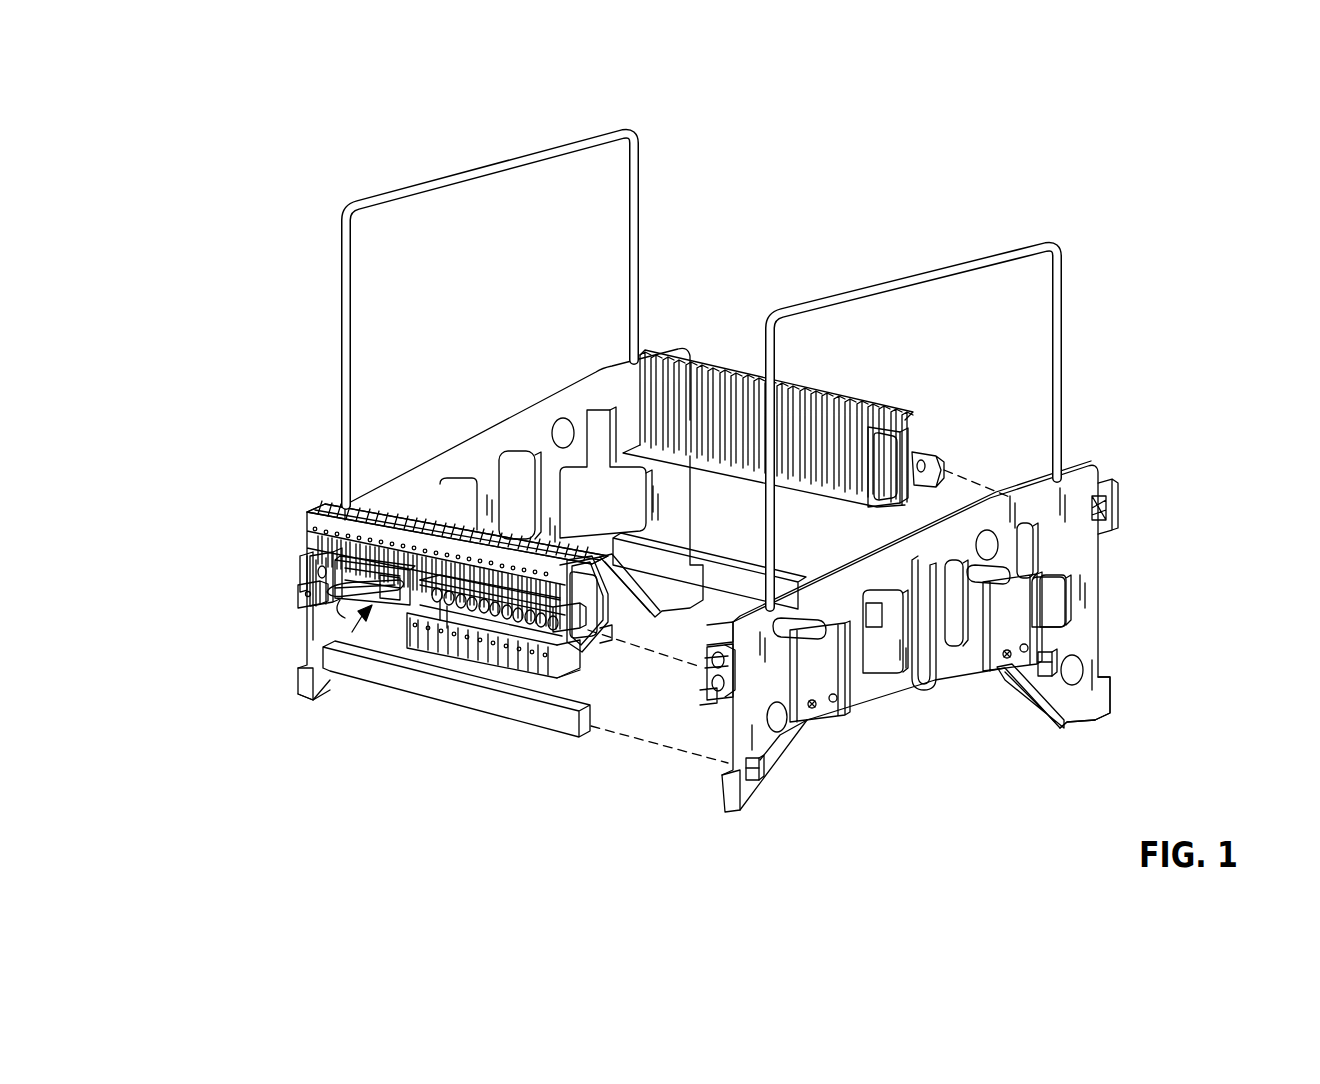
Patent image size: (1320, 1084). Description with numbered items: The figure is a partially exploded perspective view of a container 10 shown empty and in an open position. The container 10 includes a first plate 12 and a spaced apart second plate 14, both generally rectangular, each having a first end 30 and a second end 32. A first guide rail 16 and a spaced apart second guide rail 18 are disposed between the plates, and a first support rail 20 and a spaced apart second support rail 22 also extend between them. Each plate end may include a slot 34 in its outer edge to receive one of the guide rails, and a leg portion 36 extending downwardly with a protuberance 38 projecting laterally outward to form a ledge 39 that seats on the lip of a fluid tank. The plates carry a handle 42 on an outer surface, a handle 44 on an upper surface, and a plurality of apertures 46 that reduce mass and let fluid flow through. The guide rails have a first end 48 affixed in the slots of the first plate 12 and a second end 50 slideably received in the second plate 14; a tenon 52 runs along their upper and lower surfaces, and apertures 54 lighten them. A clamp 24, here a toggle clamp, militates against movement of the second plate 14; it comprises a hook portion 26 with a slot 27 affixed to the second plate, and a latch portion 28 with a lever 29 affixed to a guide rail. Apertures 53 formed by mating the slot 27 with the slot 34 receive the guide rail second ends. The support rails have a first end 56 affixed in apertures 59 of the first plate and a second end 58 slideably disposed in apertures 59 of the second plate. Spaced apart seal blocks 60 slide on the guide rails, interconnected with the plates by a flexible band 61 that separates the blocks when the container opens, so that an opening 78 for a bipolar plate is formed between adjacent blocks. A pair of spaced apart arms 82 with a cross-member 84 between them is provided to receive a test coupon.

The container 10 is at (192, 209).
The first plate 12 is at (330, 632).
The second plate 14 is at (1077, 480).
The first guide rail 16 is at (450, 660).
The second guide rail 18 is at (925, 458).
The first support rail 20 is at (514, 712).
The second support rail 22 is at (733, 586).
The clamp 24 is at (362, 625).
The hook portion 26 is at (676, 607).
The slot 27 is at (1110, 506).
The latch portion 28 is at (392, 615).
The lever 29 is at (298, 592).
The first end 30 is at (745, 748).
The second end 32 is at (1087, 590).
The slot 34 is at (1104, 517).
The leg portion 36 is at (1030, 700).
The protuberance 38 is at (1103, 693).
The ledge 39 is at (1092, 714).
The handle 42 is at (952, 652).
The handle 44 is at (512, 164).
The apertures 46 is at (938, 662).
The first end 48 is at (310, 560).
The second end 50 is at (943, 463).
The tenon 52 is at (597, 622).
The apertures 53 is at (808, 723).
The apertures 54 is at (478, 648).
The first end 56 is at (328, 662).
The second end 58 is at (581, 640).
The apertures 59 is at (1057, 658).
The seal blocks 60 is at (616, 605).
The band 61 is at (335, 524).
The opening 78 is at (343, 512).
The arms 82 is at (1005, 658).
The cross-member 84 is at (1020, 652).